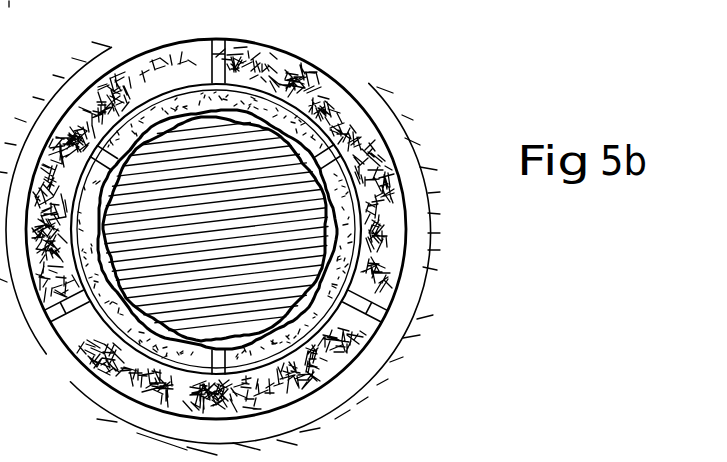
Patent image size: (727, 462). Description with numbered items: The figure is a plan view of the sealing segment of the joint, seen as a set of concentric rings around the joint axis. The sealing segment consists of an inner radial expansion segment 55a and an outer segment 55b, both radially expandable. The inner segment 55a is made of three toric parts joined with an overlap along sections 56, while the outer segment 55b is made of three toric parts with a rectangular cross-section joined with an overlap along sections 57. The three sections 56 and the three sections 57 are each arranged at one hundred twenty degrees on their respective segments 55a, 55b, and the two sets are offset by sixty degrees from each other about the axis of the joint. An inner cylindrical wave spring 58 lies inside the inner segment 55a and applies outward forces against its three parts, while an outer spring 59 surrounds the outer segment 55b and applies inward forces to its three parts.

The outer spring 59 is at (222, 42).
The inner cylindrical wave spring 58 is at (282, 125).
The sections 56 is at (340, 152).
The inner radial expansion segment 55a is at (353, 222).
The outer segment 55b is at (370, 285).
The sections 57 is at (372, 310).